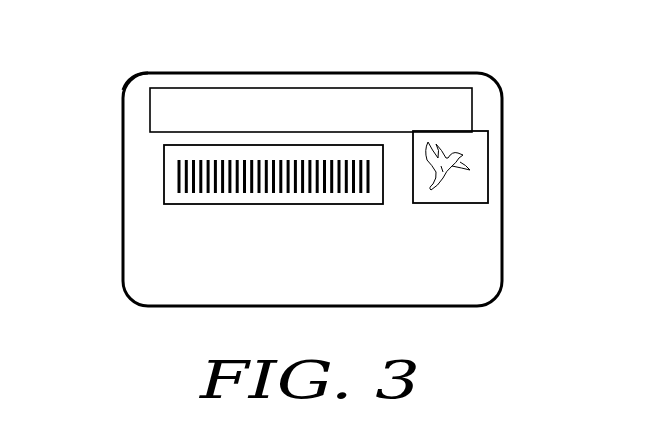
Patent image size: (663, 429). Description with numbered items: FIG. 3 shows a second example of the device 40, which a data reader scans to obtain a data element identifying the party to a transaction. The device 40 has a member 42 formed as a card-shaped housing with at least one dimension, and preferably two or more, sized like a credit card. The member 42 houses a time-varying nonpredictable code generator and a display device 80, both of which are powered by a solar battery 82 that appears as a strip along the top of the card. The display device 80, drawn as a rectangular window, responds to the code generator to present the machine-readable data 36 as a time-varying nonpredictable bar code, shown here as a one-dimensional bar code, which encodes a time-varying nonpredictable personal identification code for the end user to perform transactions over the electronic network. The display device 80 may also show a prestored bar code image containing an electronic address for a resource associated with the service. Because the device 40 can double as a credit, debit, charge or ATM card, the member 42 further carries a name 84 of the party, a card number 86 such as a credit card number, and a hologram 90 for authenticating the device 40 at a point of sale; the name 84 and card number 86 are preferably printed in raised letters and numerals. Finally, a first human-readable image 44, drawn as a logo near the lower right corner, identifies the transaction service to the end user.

The device 40 is at (112, 358).
The member 42 is at (133, 70).
The solar battery 82 is at (453, 87).
The display device 80 is at (163, 148).
The machine-readable data 36 is at (175, 182).
The hologram 90 is at (470, 164).
The card number 86 is at (465, 236).
The name 84 is at (138, 289).
The first human-readable image 44 is at (491, 278).